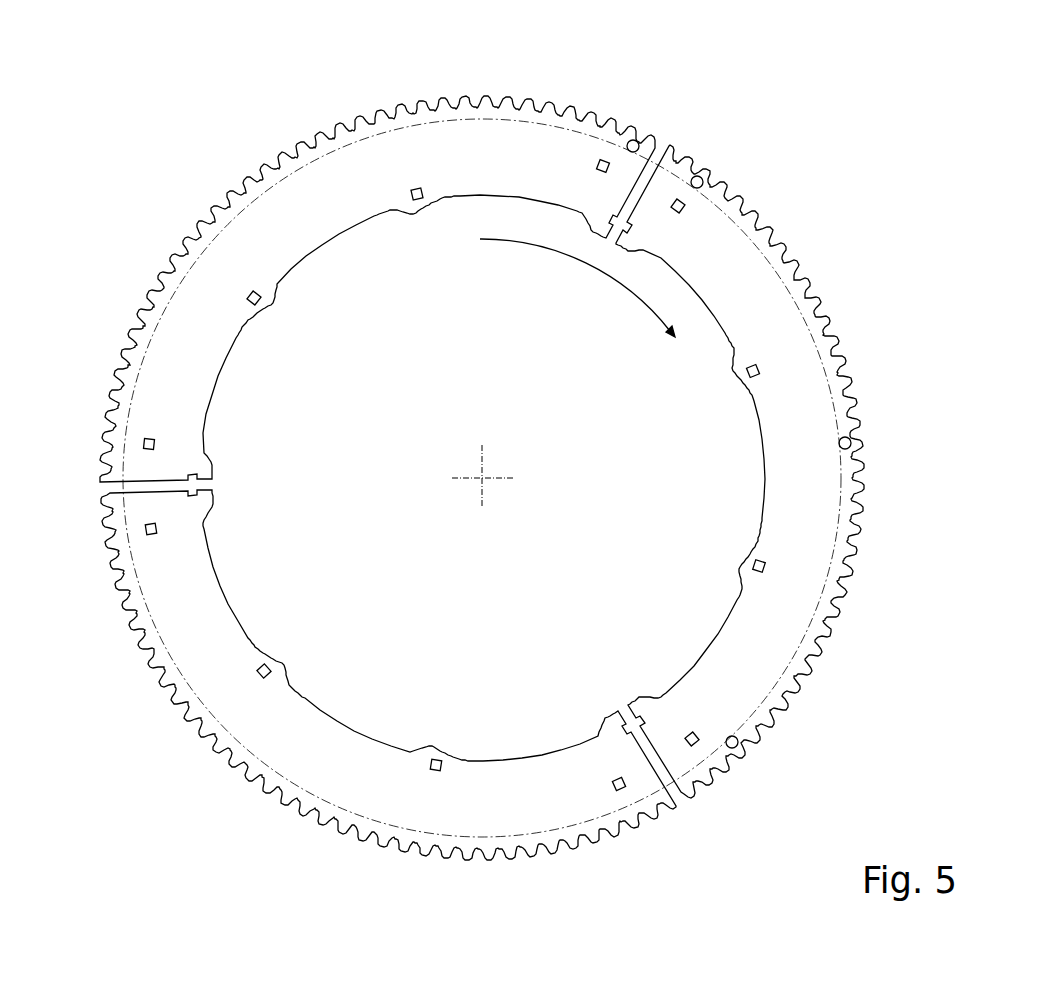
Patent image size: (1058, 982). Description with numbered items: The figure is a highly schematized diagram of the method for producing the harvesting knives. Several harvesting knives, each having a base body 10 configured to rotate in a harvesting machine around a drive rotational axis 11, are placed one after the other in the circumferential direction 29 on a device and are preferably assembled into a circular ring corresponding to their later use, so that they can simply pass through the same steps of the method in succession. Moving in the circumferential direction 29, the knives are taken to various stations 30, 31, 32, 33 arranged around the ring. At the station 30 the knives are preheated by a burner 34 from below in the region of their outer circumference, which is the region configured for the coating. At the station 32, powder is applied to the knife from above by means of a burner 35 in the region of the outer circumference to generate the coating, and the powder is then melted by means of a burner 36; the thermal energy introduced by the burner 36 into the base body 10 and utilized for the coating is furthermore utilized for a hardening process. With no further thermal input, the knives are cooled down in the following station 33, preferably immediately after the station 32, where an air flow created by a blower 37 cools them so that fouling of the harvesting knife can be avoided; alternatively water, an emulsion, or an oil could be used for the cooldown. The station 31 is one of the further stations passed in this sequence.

The base body 10 is at (499, 436).
The drive rotational axis 11 is at (482, 478).
The circumferential direction 29 is at (578, 262).
The station 30 is at (628, 105).
The station 31 is at (715, 150).
The station 32 is at (886, 416).
The station 33 is at (784, 736).
The burner 34 is at (638, 140).
The burner 35 is at (703, 180).
The burner 36 is at (851, 444).
The blower 37 is at (738, 746).